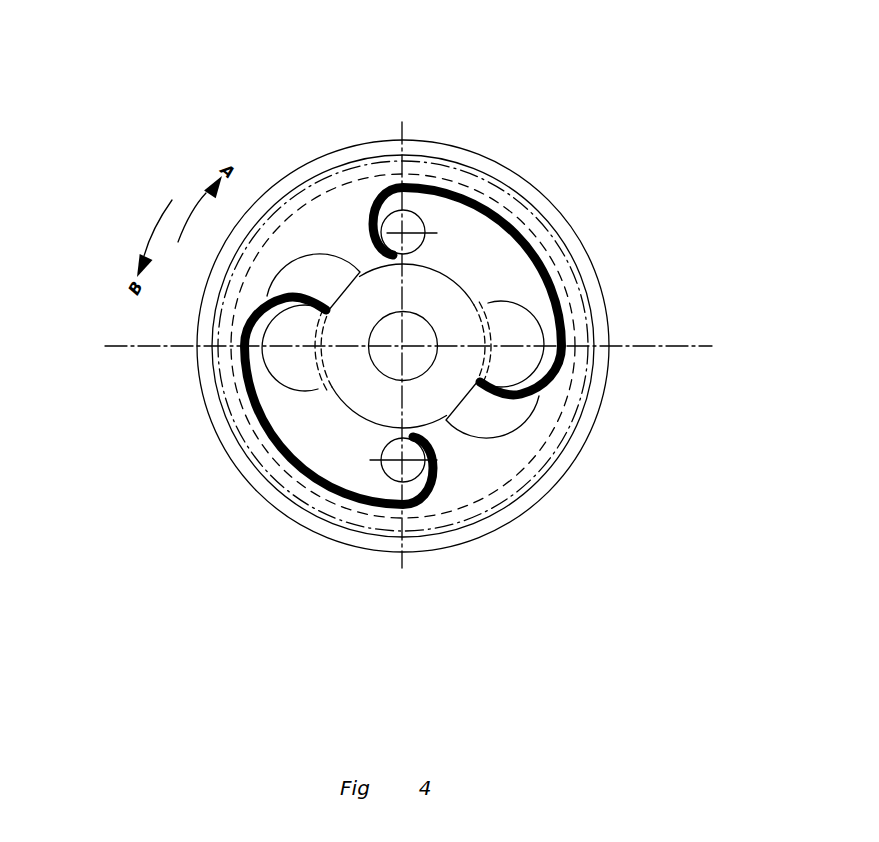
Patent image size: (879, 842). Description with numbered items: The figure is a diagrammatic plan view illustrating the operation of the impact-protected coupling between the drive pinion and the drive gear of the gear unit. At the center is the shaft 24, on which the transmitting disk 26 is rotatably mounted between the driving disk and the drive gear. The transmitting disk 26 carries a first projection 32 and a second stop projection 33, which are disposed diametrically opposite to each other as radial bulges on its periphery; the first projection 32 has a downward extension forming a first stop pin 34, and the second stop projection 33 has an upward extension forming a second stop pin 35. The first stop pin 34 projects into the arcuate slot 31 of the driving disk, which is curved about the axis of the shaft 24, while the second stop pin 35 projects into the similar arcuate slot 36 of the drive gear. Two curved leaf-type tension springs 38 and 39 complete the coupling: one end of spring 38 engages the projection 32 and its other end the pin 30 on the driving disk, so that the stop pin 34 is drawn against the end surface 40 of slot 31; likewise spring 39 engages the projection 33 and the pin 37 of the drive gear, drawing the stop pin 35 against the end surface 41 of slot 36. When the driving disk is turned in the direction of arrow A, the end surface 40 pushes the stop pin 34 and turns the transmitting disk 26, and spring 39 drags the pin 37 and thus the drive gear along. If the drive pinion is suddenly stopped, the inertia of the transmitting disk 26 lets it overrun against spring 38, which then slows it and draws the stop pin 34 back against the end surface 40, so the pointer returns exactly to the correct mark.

The shaft 24 is at (410, 332).
The transmitting disk 26 is at (433, 293).
The pin 30 is at (413, 468).
The arcuate slot 31 is at (342, 270).
The first projection 32 is at (180, 348).
The second stop projection 33 is at (627, 344).
The first stop pin 34 is at (302, 356).
The second stop pin 35 is at (517, 359).
The arcuate slot 36 is at (473, 418).
The pin 37 is at (413, 225).
The tension spring 38 is at (322, 490).
The tension spring 39 is at (498, 211).
The end surface 40 is at (290, 390).
The end surface 41 is at (490, 300).